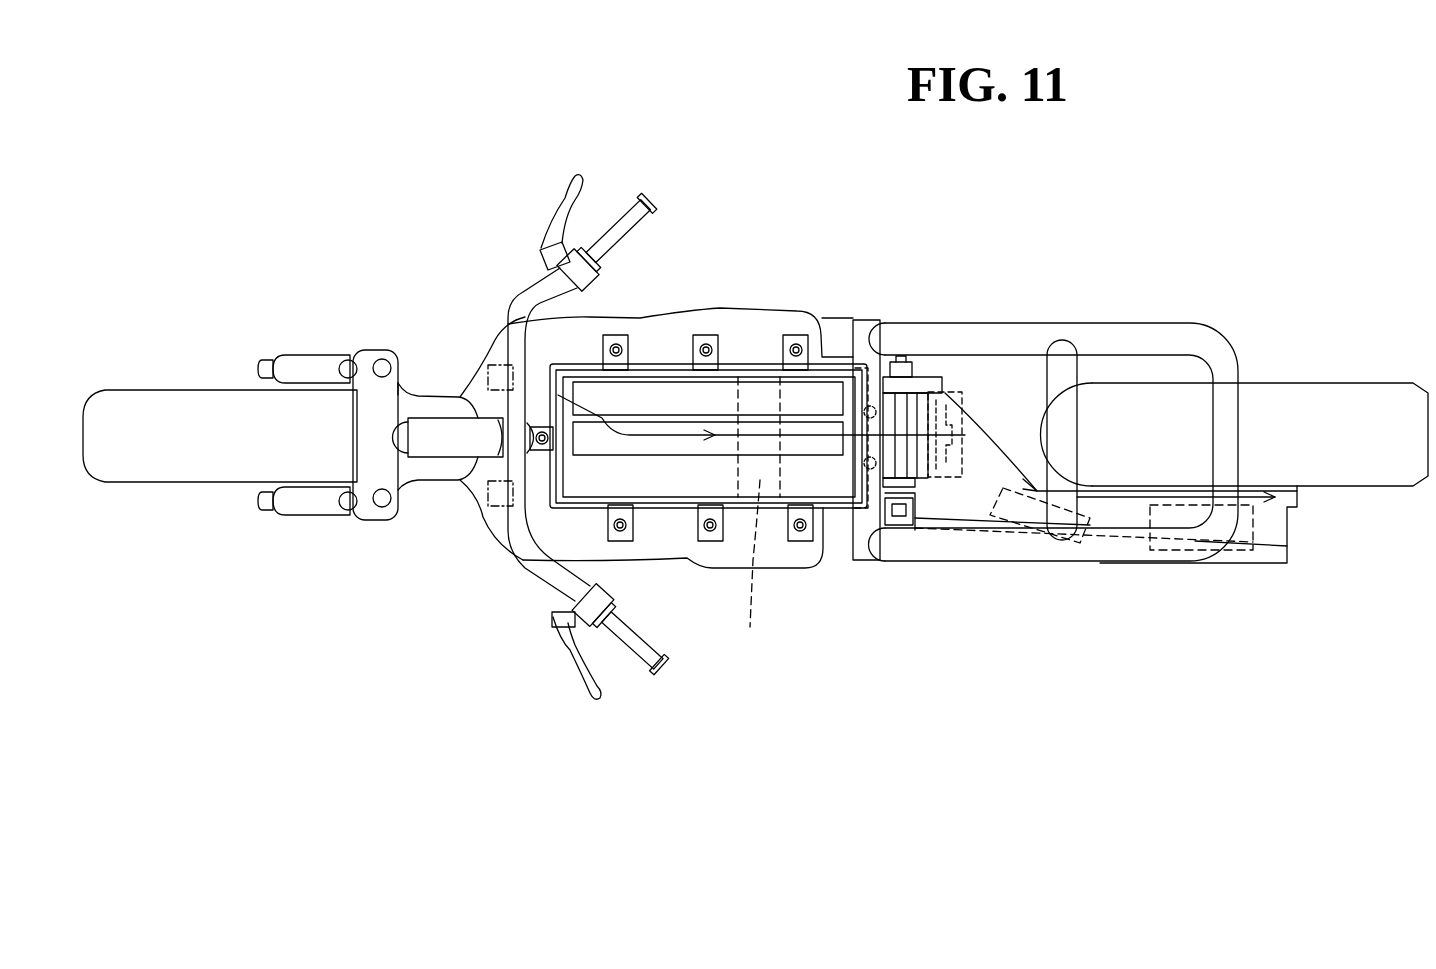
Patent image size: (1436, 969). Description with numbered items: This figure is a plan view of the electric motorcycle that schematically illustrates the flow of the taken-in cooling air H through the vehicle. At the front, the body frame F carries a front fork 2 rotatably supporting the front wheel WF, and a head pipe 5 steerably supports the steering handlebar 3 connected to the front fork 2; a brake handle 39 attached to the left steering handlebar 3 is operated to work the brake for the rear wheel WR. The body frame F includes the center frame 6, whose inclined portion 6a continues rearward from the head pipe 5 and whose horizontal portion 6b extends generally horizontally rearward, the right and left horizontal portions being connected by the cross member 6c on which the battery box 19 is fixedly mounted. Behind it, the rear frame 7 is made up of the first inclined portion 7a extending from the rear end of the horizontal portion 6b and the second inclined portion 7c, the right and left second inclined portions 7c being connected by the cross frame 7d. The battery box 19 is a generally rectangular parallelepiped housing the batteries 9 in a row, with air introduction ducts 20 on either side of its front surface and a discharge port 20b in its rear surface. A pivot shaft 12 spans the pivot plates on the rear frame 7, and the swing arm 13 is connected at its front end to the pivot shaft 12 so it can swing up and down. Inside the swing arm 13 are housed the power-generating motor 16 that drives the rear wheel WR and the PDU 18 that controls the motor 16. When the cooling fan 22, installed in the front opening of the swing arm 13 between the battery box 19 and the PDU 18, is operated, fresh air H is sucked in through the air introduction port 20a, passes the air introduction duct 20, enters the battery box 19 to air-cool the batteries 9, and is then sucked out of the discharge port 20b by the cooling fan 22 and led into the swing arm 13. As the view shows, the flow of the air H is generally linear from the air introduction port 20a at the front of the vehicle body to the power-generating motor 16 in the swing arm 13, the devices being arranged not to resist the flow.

The front wheel WF is at (178, 412).
The rear wheel WR is at (1307, 395).
The front fork 2 is at (320, 365).
The steering handlebar 3 is at (646, 205).
The head pipe 5 is at (452, 433).
The center frame 6 is at (505, 540).
The inclined portion 6a is at (477, 473).
The horizontal portion 6b is at (762, 318).
The cross member 6c is at (754, 572).
The rear frame 7 is at (1032, 341).
The first inclined portion 7a is at (836, 338).
The second inclined portion 7c is at (975, 340).
The cross frame 7d is at (1068, 367).
The batteries 9 is at (626, 397).
The pivot shaft 12 is at (903, 463).
The swing arm 13 is at (1227, 563).
The power-generating motor 16 is at (1250, 524).
The PDU 18 is at (1087, 527).
The battery box 19 is at (682, 512).
The air introduction duct 20 is at (533, 337).
The air introduction port 20a is at (485, 372).
The discharge port 20b is at (900, 356).
The cooling fan 22 is at (947, 467).
The brake handle 39 is at (580, 190).
The body frame F is at (490, 543).
The air H is at (1157, 500).